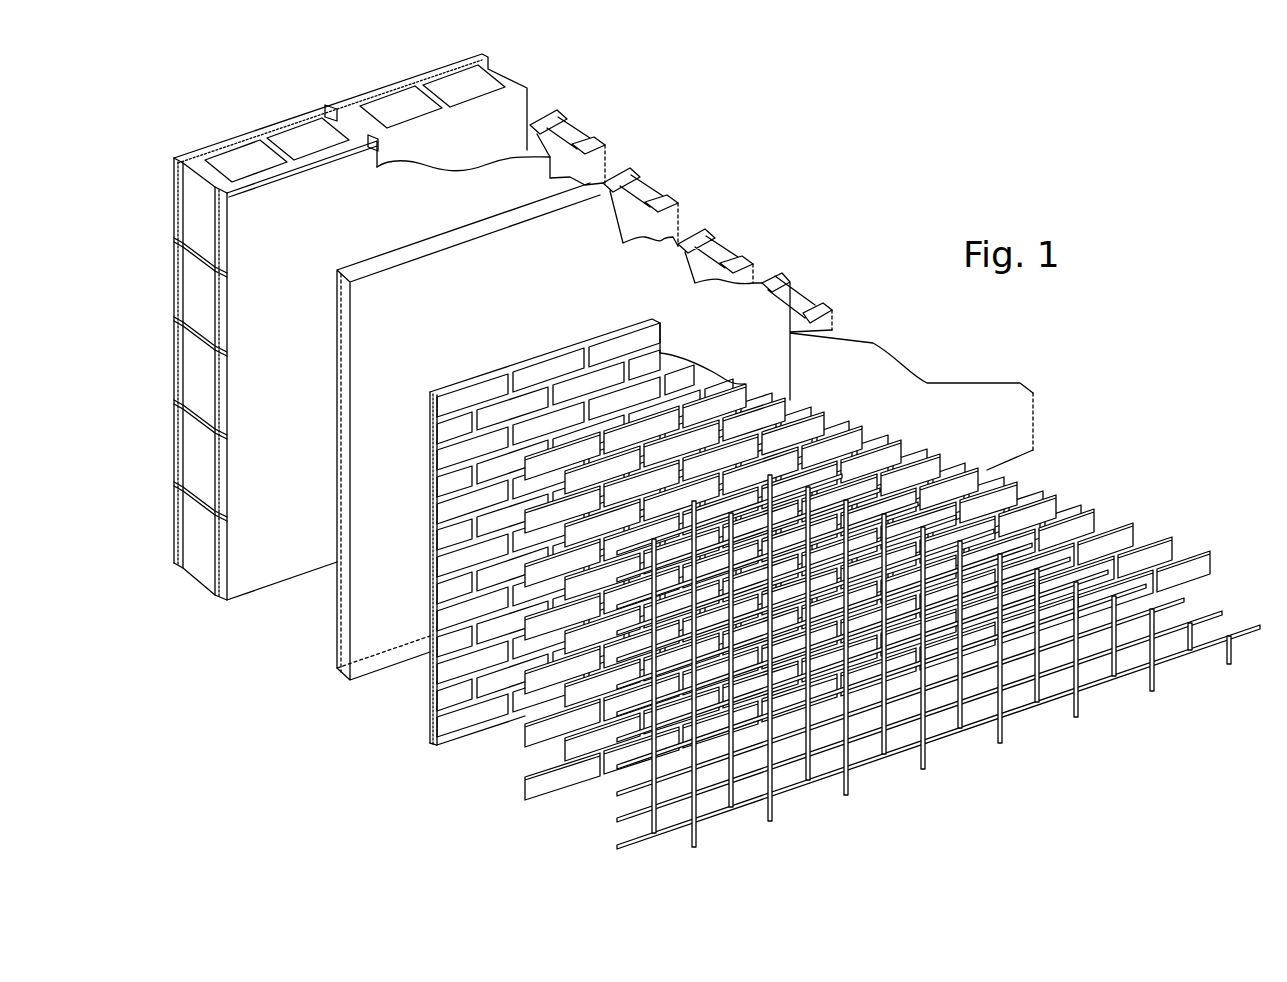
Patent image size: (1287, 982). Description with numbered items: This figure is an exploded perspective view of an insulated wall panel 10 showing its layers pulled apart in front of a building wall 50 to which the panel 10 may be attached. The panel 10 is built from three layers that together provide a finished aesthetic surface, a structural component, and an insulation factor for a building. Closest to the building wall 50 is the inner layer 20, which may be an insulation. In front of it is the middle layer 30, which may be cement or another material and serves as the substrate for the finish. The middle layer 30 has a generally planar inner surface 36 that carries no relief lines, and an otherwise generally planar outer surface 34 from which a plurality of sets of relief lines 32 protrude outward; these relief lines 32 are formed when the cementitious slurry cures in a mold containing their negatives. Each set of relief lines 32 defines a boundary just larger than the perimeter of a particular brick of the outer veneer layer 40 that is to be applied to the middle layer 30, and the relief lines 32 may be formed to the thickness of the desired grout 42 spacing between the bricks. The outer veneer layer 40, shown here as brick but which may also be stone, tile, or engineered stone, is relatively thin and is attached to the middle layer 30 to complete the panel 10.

The insulated wall panel 10 is at (318, 783).
The inner layer 20 is at (343, 637).
The middle layer 30 is at (433, 740).
The relief lines 32 is at (433, 703).
The outer surface 34 is at (472, 628).
The inner surface 36 is at (428, 686).
The outer veneer layer 40 is at (560, 788).
The grout 42 is at (698, 832).
The building wall 50 is at (207, 542).